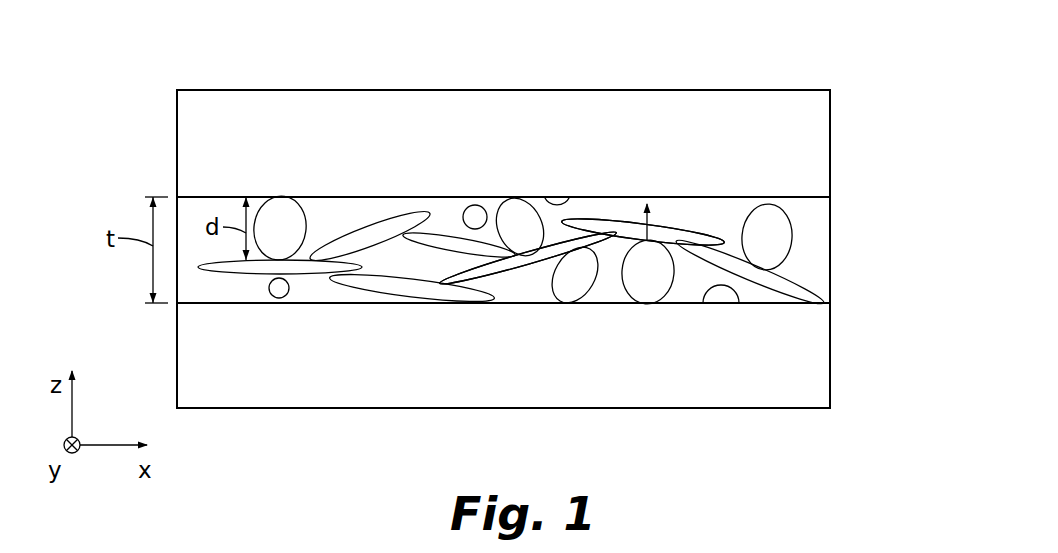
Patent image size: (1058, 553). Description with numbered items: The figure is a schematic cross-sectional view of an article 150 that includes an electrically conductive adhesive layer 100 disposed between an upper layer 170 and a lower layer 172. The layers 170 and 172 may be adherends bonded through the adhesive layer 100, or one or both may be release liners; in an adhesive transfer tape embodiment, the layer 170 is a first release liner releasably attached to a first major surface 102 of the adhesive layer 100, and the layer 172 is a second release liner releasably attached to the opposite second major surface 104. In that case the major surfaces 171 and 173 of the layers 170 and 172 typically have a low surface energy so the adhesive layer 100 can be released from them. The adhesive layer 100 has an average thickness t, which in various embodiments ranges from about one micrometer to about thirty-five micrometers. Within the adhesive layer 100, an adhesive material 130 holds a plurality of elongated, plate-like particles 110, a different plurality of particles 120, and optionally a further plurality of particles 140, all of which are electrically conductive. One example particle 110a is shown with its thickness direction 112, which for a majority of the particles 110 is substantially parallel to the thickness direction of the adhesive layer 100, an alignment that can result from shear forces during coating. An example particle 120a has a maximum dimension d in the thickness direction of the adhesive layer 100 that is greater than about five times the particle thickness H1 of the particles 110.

The article 150 is at (120, 90).
The electrically conductive adhesive layer 100 is at (207, 212).
The layer 170 is at (270, 143).
The layer 172 is at (287, 378).
The adhesive material 130 is at (812, 240).
The major surface 171 is at (547, 197).
The first major surface 102 is at (598, 196).
The second major surface 104 is at (368, 303).
The major surface 173 is at (760, 305).
The particles 110 is at (463, 243).
The particle 110a is at (612, 223).
The thickness direction 112 is at (650, 218).
The particles 120 is at (772, 232).
The particle 120a is at (285, 228).
The particles 140 is at (473, 213).